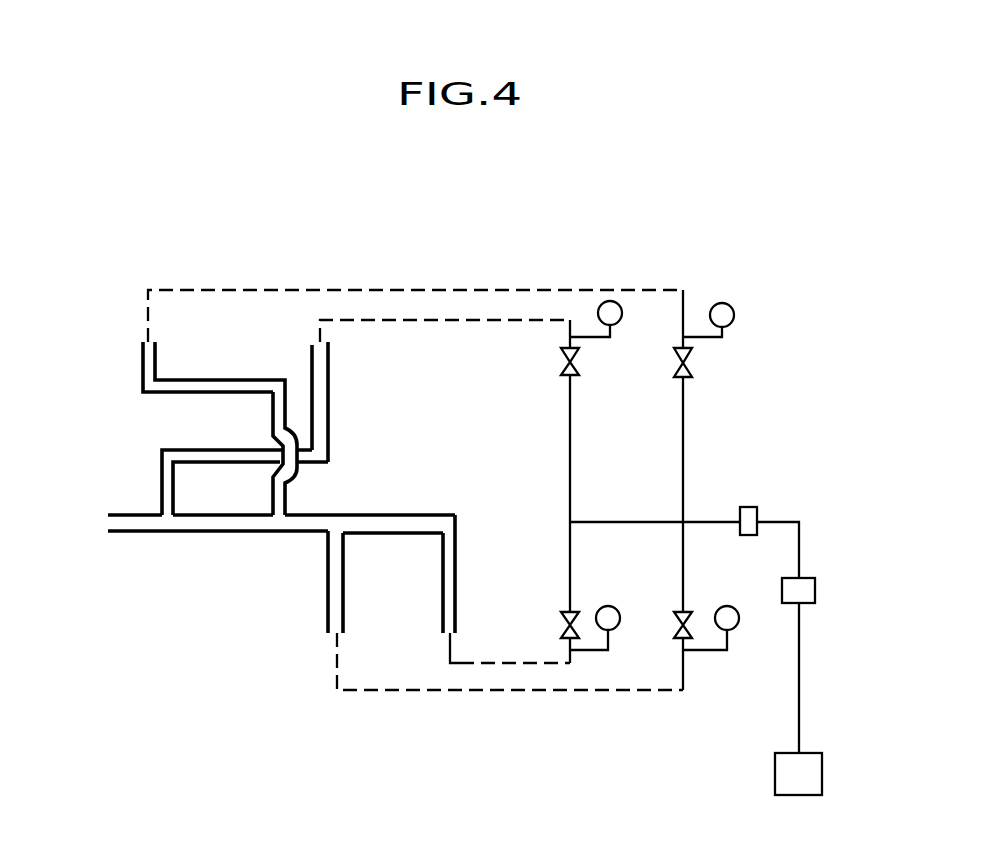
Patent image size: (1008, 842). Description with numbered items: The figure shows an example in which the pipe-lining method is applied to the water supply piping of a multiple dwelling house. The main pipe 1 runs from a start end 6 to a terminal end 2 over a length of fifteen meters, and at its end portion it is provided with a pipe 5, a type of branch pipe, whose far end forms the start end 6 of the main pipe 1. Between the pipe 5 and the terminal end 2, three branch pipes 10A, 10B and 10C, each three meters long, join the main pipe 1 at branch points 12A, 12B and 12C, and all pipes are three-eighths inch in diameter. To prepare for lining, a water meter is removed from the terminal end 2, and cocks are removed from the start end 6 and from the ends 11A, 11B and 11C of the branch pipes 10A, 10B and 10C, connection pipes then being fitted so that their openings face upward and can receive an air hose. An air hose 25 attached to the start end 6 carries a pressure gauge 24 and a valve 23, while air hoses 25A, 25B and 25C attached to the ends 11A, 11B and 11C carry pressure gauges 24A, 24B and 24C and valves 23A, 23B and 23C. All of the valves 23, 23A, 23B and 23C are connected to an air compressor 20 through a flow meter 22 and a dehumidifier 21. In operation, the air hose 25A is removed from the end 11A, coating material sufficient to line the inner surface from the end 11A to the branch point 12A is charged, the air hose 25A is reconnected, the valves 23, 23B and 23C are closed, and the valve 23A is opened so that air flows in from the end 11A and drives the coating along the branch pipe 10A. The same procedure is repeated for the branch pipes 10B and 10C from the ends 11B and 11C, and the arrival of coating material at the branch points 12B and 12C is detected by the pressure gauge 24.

The main pipe 1 is at (177, 535).
The terminal end 2 is at (112, 523).
The pipe 5 is at (458, 577).
The start end 6 is at (452, 638).
The branch pipe 10A is at (328, 592).
The branch pipe 10B is at (213, 380).
The branch pipe 10C is at (330, 393).
The end of branch pipe 11A is at (333, 633).
The end of branch pipe 11B is at (147, 342).
The end of branch pipe 11C is at (330, 343).
The branch point 12A is at (327, 537).
The branch point 12B is at (287, 516).
The branch point 12C is at (158, 515).
The air compressor 20 is at (813, 753).
The dehumidifier 21 is at (813, 578).
The flow meter 22 is at (750, 507).
The valve 23 is at (575, 617).
The valve 23A is at (688, 617).
The valve 23B is at (692, 365).
The valve 23C is at (577, 372).
The pressure gauge 24 is at (619, 623).
The pressure gauge 24A is at (738, 623).
The pressure gauge 24B is at (729, 305).
The pressure gauge 24C is at (612, 301).
The air hose 25 is at (497, 665).
The air hose 25A is at (400, 693).
The air hose 25B is at (367, 290).
The air hose 25C is at (463, 320).